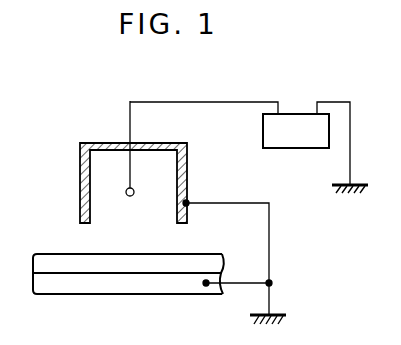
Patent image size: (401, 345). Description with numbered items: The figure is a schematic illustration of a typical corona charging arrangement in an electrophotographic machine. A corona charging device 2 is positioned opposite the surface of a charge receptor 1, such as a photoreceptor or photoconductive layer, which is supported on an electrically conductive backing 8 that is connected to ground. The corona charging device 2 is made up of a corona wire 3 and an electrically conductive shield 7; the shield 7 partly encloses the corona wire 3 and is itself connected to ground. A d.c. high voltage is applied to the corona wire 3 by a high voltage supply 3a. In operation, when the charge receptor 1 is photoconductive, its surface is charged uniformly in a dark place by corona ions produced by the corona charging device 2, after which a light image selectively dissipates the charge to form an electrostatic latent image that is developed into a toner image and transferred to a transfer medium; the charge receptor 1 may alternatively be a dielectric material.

The charge receptor 1 is at (60, 262).
The corona charging device 2 is at (71, 150).
The corona wire 3 is at (133, 195).
The high voltage supply 3a is at (292, 148).
The electrically conductive shield 7 is at (153, 146).
The electrically conductive backing 8 is at (86, 287).